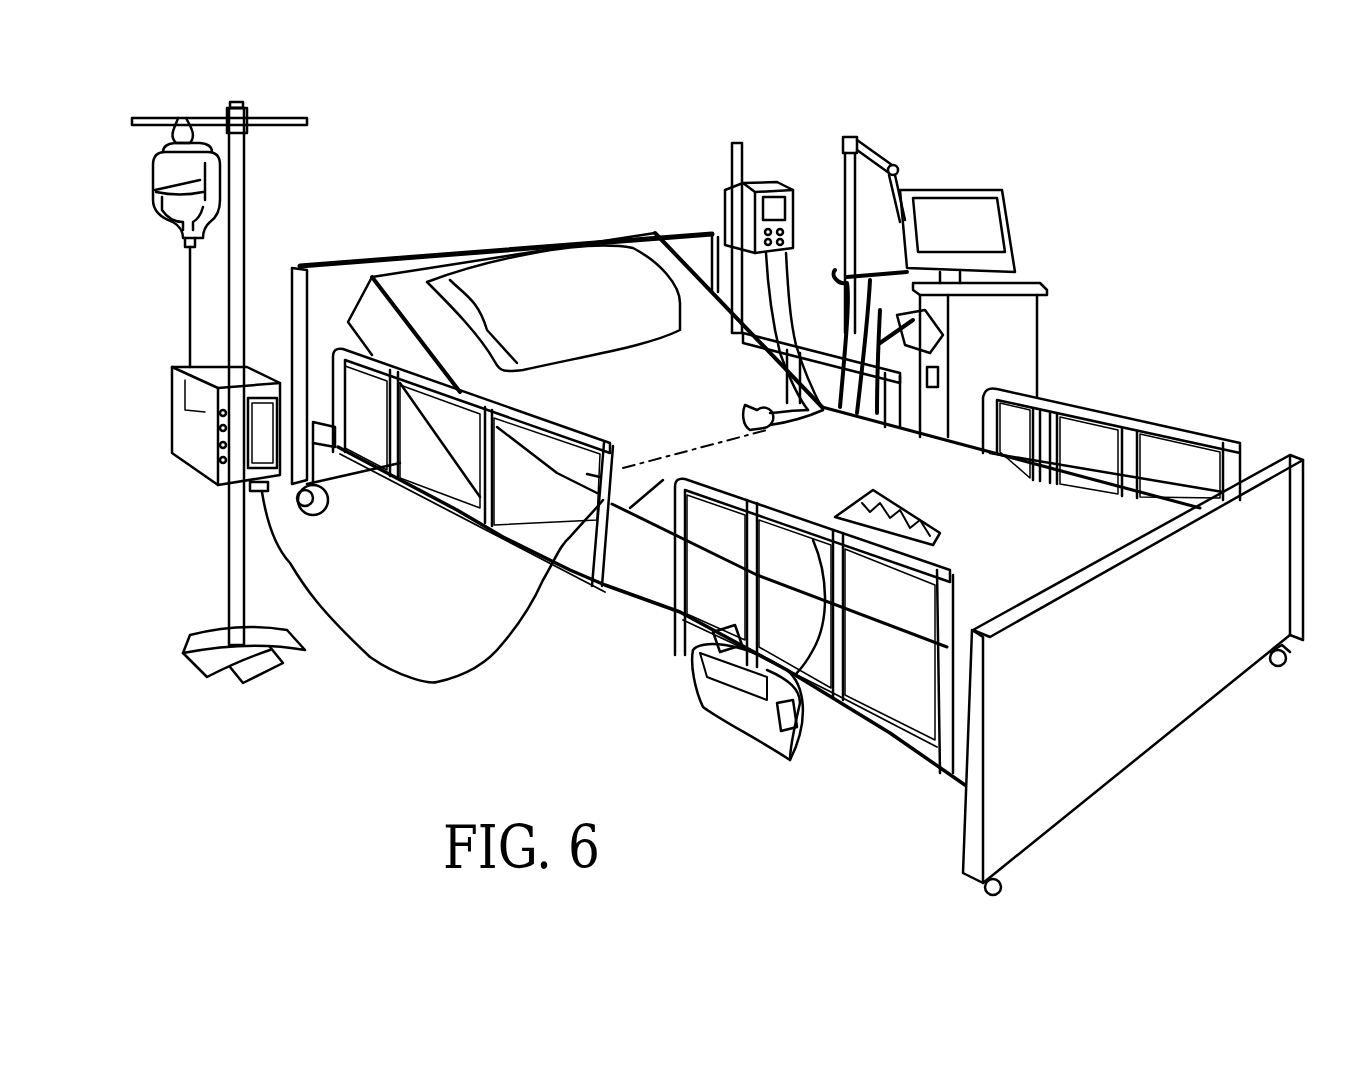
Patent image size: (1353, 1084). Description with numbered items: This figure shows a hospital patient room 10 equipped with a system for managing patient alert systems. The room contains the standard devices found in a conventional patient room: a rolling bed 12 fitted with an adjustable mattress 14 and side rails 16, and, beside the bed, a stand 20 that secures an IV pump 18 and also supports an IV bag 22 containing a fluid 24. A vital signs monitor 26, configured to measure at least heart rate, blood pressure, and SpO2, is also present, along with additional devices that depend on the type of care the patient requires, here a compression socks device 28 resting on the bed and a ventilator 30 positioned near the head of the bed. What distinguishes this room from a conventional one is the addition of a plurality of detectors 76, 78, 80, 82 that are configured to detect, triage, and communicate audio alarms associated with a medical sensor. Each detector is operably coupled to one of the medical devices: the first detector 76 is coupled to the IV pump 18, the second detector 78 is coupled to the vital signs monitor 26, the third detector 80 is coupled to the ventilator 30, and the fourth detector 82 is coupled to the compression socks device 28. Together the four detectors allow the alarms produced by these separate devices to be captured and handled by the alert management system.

The hospital patient room 10 is at (1013, 150).
The rolling bed 12 is at (1190, 712).
The adjustable mattress 14 is at (1147, 490).
The side rails 16 is at (1070, 400).
The IV pump 18 is at (172, 460).
The stand 20 is at (245, 237).
The IV bag 22 is at (150, 176).
The fluid 24 is at (183, 212).
The vital signs monitor 26 is at (807, 187).
The compression socks device 28 is at (940, 503).
The ventilator 30 is at (1030, 280).
The first detector 76 is at (255, 490).
The second detector 78 is at (782, 263).
The third detector 80 is at (940, 383).
The fourth detector 82 is at (797, 713).